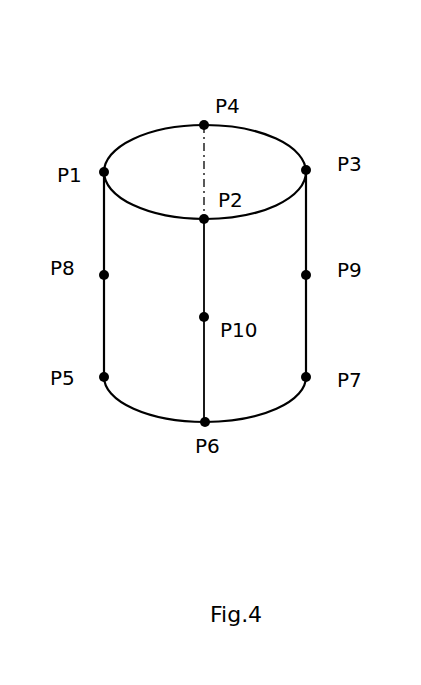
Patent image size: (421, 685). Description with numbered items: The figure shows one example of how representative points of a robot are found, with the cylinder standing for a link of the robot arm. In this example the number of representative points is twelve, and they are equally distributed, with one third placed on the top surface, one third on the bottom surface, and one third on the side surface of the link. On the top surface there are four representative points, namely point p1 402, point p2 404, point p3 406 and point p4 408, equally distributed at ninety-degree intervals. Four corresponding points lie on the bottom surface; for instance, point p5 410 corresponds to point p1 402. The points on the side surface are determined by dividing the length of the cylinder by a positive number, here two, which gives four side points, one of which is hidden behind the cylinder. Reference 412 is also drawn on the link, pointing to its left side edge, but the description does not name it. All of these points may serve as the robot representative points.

The representative point p1 402 is at (95, 130).
The representative point p2 404 is at (192, 238).
The representative point p3 406 is at (305, 153).
The representative point p4 408 is at (188, 118).
The representative point p5 410 is at (103, 407).
The left edge line of cylinder 412 is at (92, 288).